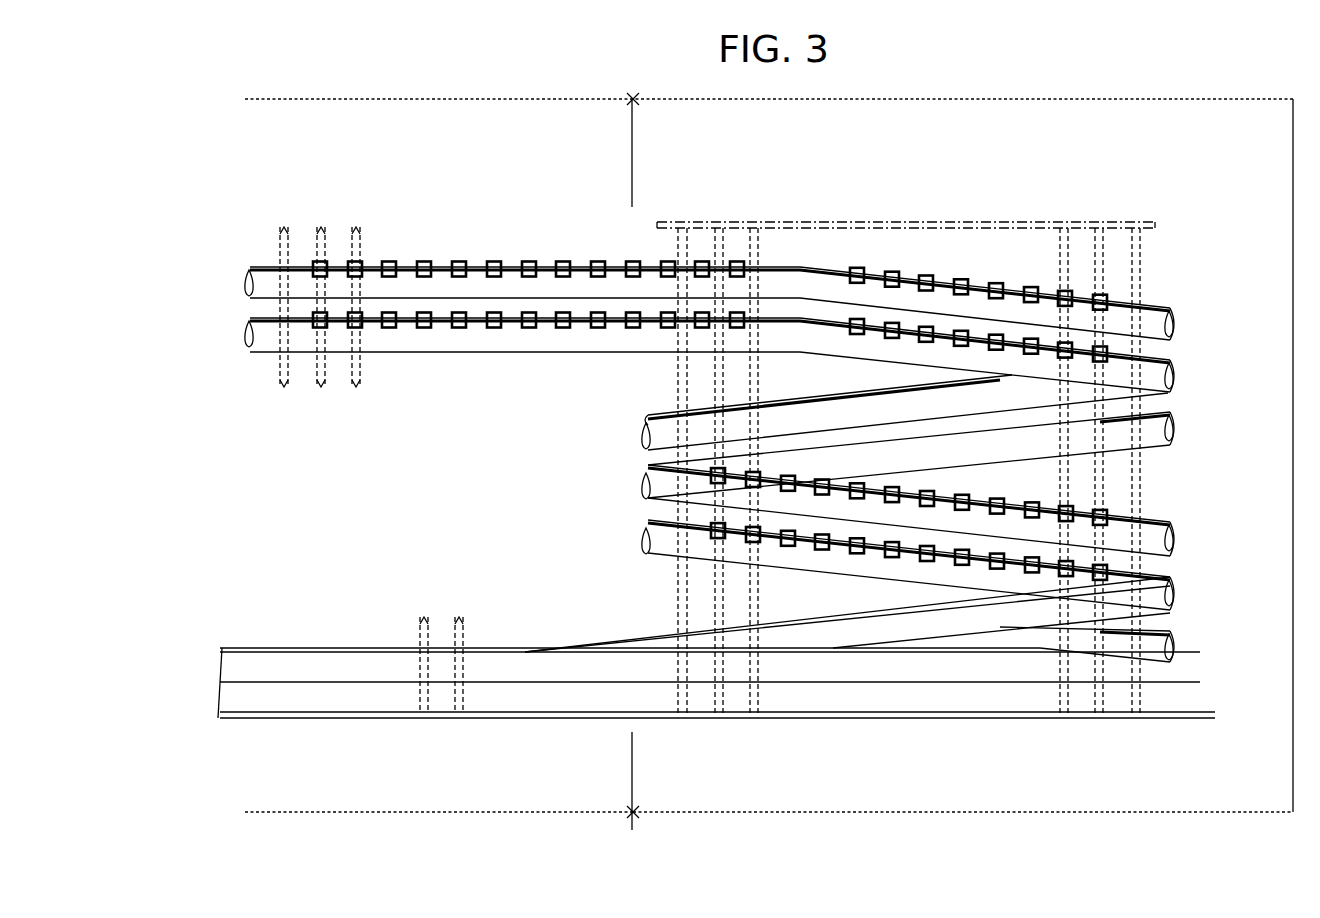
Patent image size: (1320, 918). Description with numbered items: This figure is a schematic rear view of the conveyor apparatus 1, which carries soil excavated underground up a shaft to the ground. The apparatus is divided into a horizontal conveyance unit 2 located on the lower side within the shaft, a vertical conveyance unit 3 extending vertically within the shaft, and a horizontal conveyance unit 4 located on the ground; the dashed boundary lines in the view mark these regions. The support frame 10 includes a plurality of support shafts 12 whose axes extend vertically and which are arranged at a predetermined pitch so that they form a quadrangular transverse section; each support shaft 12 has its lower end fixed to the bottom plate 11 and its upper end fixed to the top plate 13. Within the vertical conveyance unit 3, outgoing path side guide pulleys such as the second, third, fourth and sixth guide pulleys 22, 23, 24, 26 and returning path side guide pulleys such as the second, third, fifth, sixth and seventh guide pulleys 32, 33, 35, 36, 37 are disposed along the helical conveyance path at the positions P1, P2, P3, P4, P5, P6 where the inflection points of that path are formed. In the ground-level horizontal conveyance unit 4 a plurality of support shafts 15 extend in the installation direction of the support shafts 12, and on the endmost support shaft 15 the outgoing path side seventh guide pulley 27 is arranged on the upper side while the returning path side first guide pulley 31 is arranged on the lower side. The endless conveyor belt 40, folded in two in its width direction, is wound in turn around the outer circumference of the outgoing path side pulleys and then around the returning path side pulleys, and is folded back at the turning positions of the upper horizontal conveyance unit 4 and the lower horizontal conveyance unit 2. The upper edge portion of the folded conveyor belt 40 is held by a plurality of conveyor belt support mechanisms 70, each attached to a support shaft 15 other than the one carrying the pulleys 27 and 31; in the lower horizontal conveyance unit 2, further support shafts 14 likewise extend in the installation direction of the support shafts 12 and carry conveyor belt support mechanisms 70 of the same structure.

The conveyor apparatus 1 is at (600, 205).
The horizontal conveyance unit 2 is at (453, 812).
The vertical conveyance unit 3 is at (933, 812).
The horizontal conveyance unit 4 is at (497, 99).
The support frame 10 is at (937, 222).
The bottom plate 11 is at (602, 718).
The support shaft 12 is at (770, 255).
The top plate 13 is at (822, 220).
The support shaft 14 is at (460, 615).
The support shaft 15 is at (288, 228).
The outgoing path side second guide pulley 22 is at (1160, 523).
The outgoing path side third guide pulley 23 is at (648, 467).
The outgoing path side fourth guide pulley 24 is at (648, 418).
The outgoing path side sixth guide pulley 26 is at (1152, 308).
The outgoing path side seventh guide pulley 27 is at (254, 266).
The returning path side first guide pulley 31 is at (277, 360).
The returning path side second guide pulley 32 is at (1158, 352).
The returning path side third guide pulley 33 is at (1157, 410).
The returning path side fifth guide pulley 35 is at (648, 520).
The returning path side sixth guide pulley 36 is at (1160, 580).
The returning path side seventh guide pulley 37 is at (1160, 628).
The conveyor belt 40 is at (857, 668).
The conveyor belt support mechanism 70 is at (1078, 510).
The position P1 is at (1155, 603).
The position P2 is at (1150, 492).
The position P3 is at (675, 443).
The position P4 is at (680, 404).
The position P5 is at (1150, 383).
The position P6 is at (1142, 292).